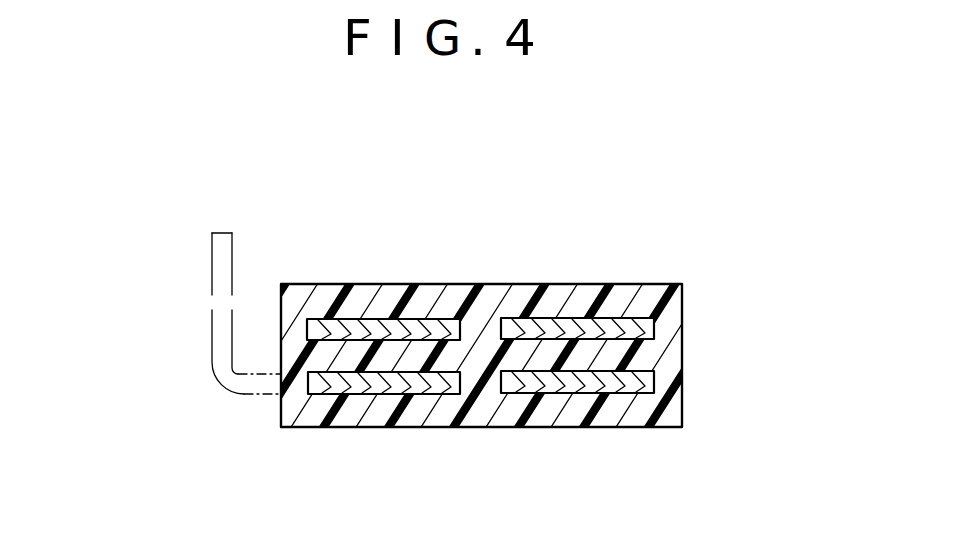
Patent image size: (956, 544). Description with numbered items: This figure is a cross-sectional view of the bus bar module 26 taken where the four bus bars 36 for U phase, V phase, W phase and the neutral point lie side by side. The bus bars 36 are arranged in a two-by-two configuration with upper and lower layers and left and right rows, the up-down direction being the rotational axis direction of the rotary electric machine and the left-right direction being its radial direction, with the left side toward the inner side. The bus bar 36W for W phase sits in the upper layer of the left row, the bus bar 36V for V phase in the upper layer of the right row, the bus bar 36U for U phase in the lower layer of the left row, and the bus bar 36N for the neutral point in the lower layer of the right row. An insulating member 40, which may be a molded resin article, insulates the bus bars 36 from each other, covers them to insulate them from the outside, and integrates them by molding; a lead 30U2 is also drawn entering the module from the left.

The bus bar module 26 is at (661, 204).
The lead wire / coil lead 30U2 is at (212, 258).
The bus bar 36 is at (564, 355).
The bus bar for W phase 36W is at (377, 333).
The bus bar for V phase 36V is at (632, 322).
The bus bar for U phase 36U is at (357, 384).
The bus bar for the neutral point 36N is at (612, 387).
The insulating member 40 is at (497, 305).